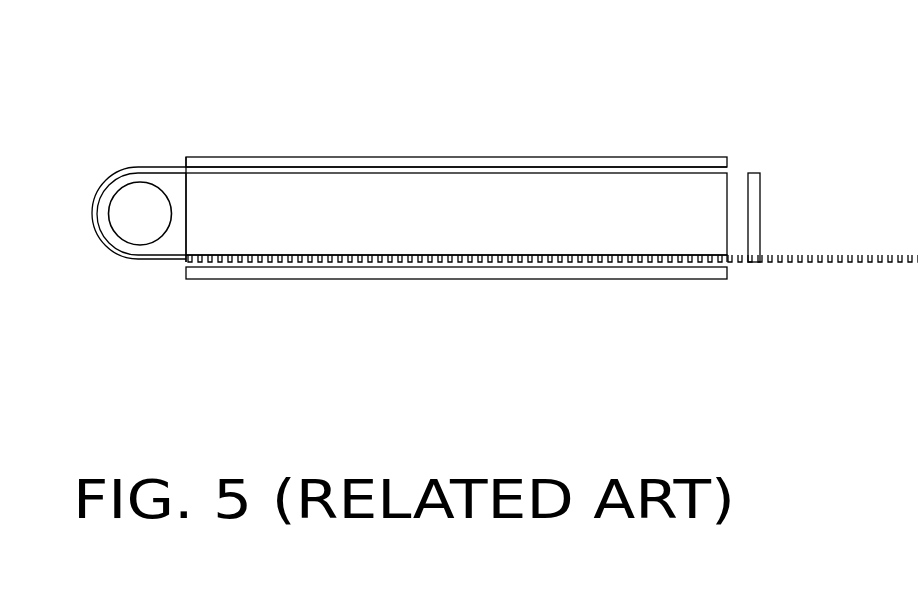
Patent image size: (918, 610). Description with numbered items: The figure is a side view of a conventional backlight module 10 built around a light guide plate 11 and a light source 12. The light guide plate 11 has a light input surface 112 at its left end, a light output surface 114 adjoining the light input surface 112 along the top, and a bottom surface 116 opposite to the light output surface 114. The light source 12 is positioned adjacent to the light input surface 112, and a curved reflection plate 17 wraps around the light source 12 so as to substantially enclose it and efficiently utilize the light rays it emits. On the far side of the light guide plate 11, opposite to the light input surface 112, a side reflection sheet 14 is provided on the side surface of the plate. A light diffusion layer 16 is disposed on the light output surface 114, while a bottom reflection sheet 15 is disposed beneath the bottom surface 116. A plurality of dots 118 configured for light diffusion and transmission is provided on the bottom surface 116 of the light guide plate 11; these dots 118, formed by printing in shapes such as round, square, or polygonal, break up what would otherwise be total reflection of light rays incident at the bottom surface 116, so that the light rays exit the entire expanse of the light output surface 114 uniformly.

The backlight module 10 is at (488, 88).
The light guide plate 11 is at (448, 190).
The light input surface 112 is at (186, 197).
The light output surface 114 is at (601, 157).
The bottom surface 116 is at (223, 266).
The dots 118 is at (650, 260).
The light source 12 is at (129, 203).
The side reflection sheet 14 is at (752, 222).
The bottom reflection sheet 15 is at (722, 275).
The light diffusion layer 16 is at (697, 163).
The curved reflection plate 17 is at (120, 257).